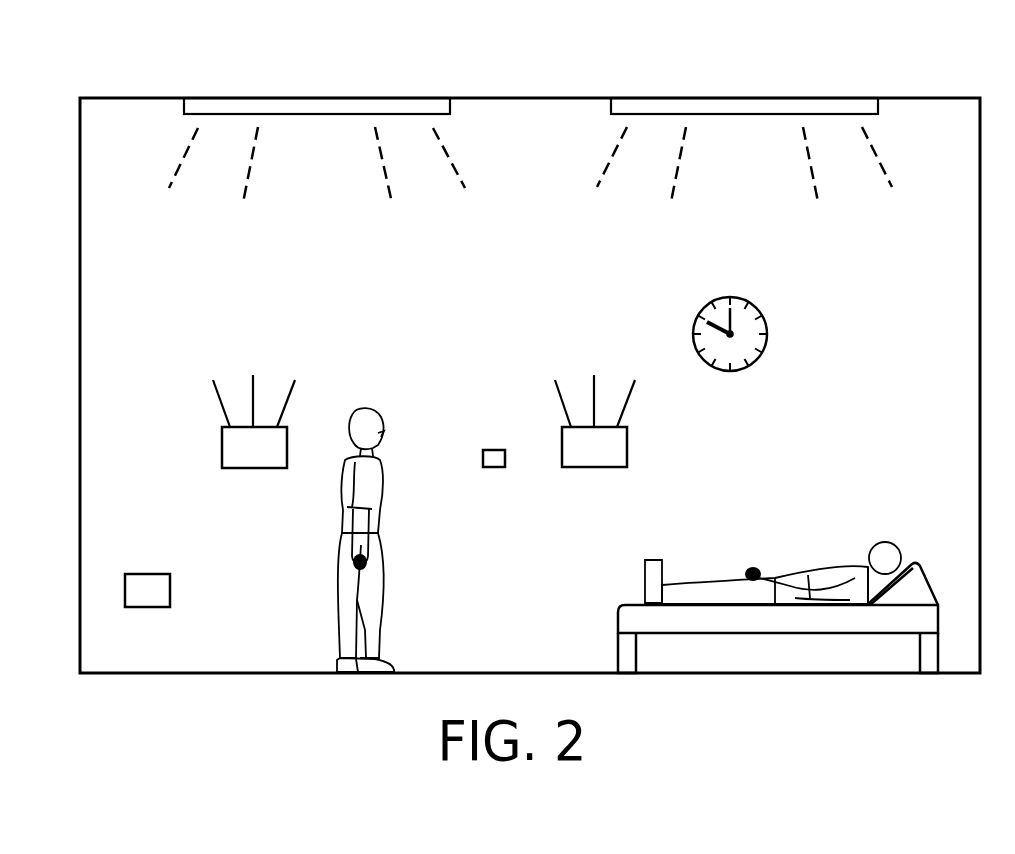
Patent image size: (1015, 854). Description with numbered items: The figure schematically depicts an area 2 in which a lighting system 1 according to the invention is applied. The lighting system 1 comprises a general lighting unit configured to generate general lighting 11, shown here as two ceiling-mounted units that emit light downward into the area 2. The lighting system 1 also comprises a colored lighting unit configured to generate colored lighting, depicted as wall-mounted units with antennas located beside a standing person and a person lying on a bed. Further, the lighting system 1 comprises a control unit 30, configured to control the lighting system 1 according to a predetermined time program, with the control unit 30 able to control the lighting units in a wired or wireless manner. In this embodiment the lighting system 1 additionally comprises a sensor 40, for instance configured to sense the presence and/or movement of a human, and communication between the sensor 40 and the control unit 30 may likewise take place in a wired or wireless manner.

The lighting system 1 is at (504, 248).
The area 2 is at (868, 367).
The general lighting 11 is at (878, 157).
The control unit 30 is at (147, 578).
The sensor 40 is at (494, 450).